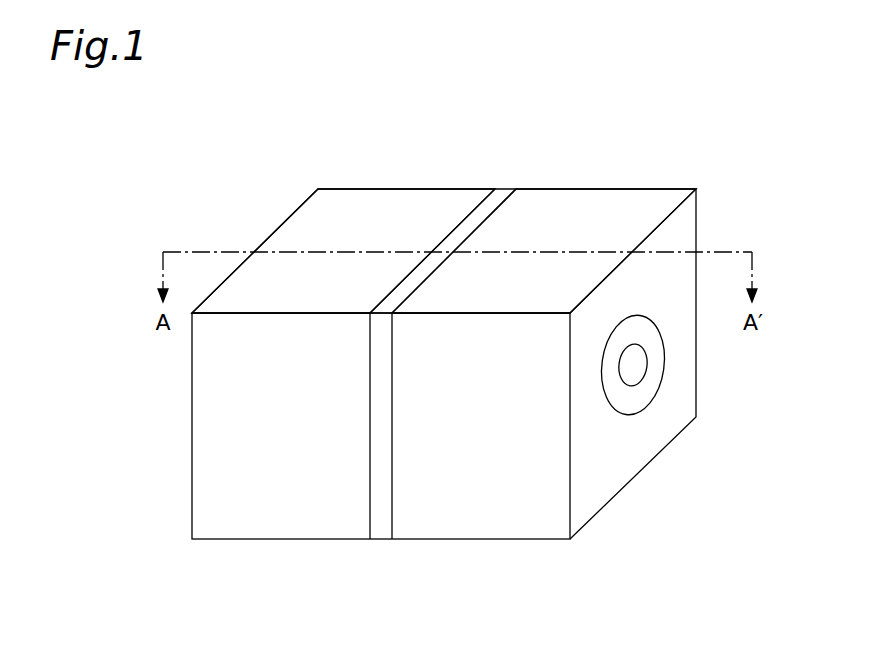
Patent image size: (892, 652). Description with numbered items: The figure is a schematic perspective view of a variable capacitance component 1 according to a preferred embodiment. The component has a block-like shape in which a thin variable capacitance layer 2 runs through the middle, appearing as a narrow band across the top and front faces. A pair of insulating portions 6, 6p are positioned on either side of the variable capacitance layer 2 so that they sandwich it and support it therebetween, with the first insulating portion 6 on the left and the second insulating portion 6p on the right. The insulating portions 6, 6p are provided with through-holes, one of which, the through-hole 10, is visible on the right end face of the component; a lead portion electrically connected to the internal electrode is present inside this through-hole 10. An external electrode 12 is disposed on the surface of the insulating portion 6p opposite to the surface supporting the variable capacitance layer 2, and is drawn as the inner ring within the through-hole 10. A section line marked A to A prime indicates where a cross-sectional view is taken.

The variable capacitance component 1 is at (186, 190).
The variable capacitance layer 2 is at (500, 197).
The insulating portion 6 is at (342, 197).
The insulating portion 6p is at (632, 197).
The through-hole 10 is at (632, 375).
The external electrode 12 is at (655, 370).